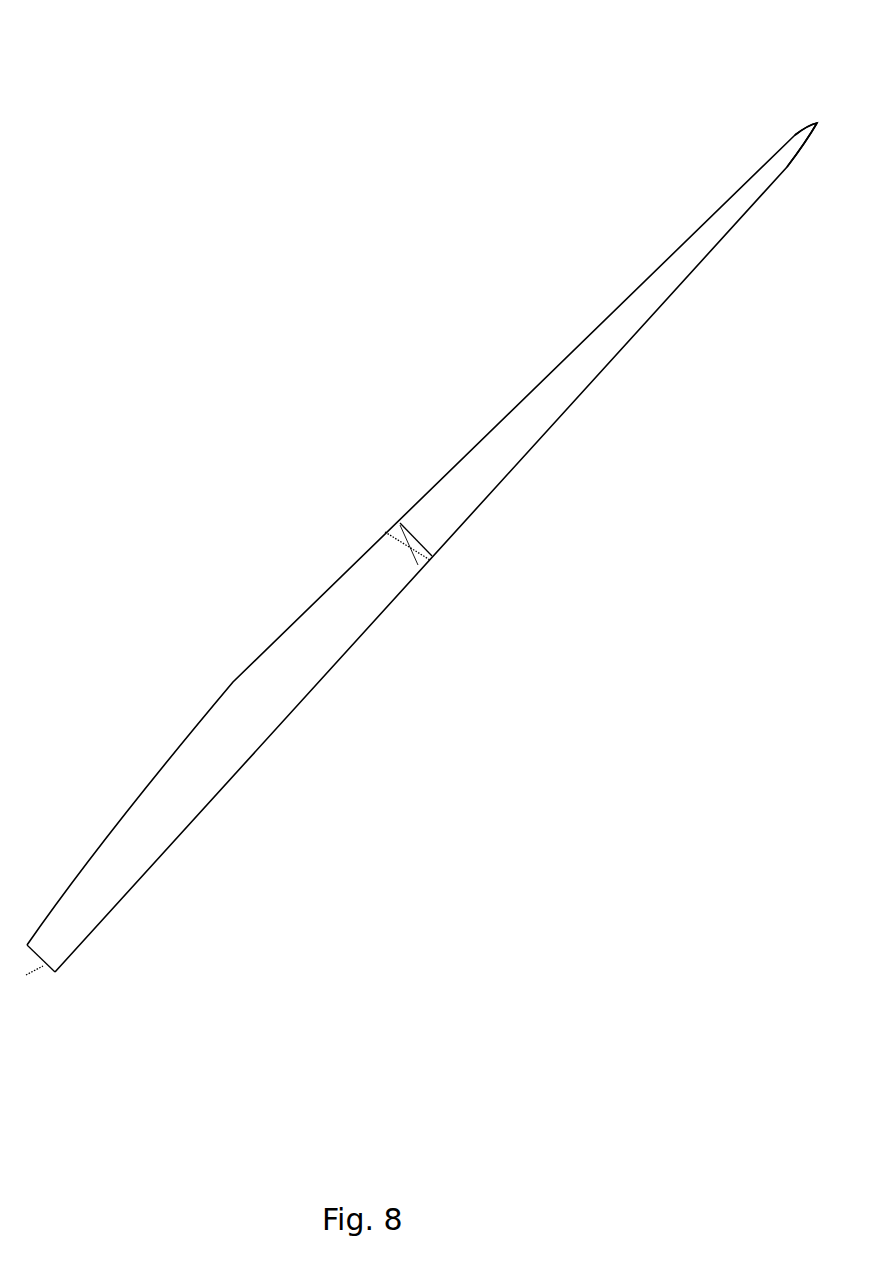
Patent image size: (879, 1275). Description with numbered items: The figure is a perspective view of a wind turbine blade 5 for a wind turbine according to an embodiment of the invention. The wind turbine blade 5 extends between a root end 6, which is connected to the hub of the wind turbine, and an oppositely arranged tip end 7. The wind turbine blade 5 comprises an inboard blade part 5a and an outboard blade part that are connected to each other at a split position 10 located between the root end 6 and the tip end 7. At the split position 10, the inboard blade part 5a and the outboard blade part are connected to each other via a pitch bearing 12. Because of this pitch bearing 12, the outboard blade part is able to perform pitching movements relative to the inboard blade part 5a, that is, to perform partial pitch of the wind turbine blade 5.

The wind turbine blade 5 is at (421, 536).
The inboard blade part 5a is at (235, 722).
The root end 6 is at (43, 964).
The tip end 7 is at (815, 120).
The split position 10 is at (408, 543).
The pitch bearing 12 is at (432, 556).